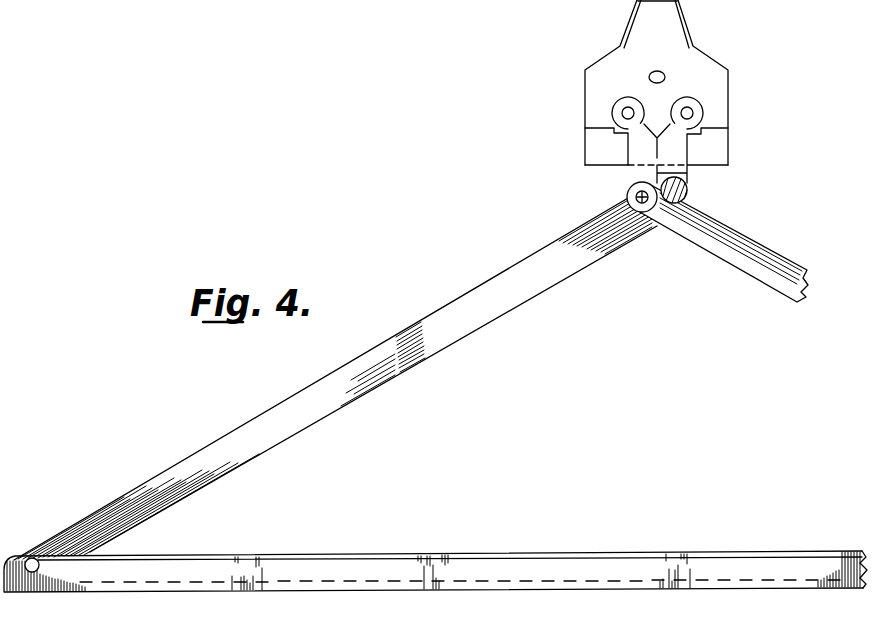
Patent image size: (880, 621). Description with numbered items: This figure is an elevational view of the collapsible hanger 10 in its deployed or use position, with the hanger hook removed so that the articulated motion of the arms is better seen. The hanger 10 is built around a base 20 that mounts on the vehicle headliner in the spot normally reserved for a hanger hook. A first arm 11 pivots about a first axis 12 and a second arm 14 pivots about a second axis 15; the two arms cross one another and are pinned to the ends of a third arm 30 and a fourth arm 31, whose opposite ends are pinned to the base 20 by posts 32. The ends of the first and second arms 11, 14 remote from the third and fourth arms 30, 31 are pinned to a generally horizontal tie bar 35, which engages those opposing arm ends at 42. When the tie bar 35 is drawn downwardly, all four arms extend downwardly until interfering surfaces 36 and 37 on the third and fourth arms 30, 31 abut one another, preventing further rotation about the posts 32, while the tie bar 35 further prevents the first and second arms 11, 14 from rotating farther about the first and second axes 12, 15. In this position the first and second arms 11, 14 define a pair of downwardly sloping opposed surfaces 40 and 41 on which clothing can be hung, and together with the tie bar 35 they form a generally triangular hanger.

The collapsible hanger 10 is at (412, 170).
The first arm 11 is at (218, 448).
The first axis 12 is at (641, 205).
The second arm 14 is at (777, 278).
The second axis 15 is at (673, 204).
The base 20 is at (664, 16).
The third arm 30 is at (643, 140).
The fourth arm 31 is at (674, 153).
The posts 32 is at (621, 112).
The tie bar 35 is at (571, 549).
The interfering surface 36 is at (640, 162).
The interfering surface 37 is at (689, 178).
The downwardly sloping surface 40 is at (329, 372).
The downwardly sloping surface 41 is at (723, 224).
The engagement point of tie bar and arm ends 42 is at (32, 558).